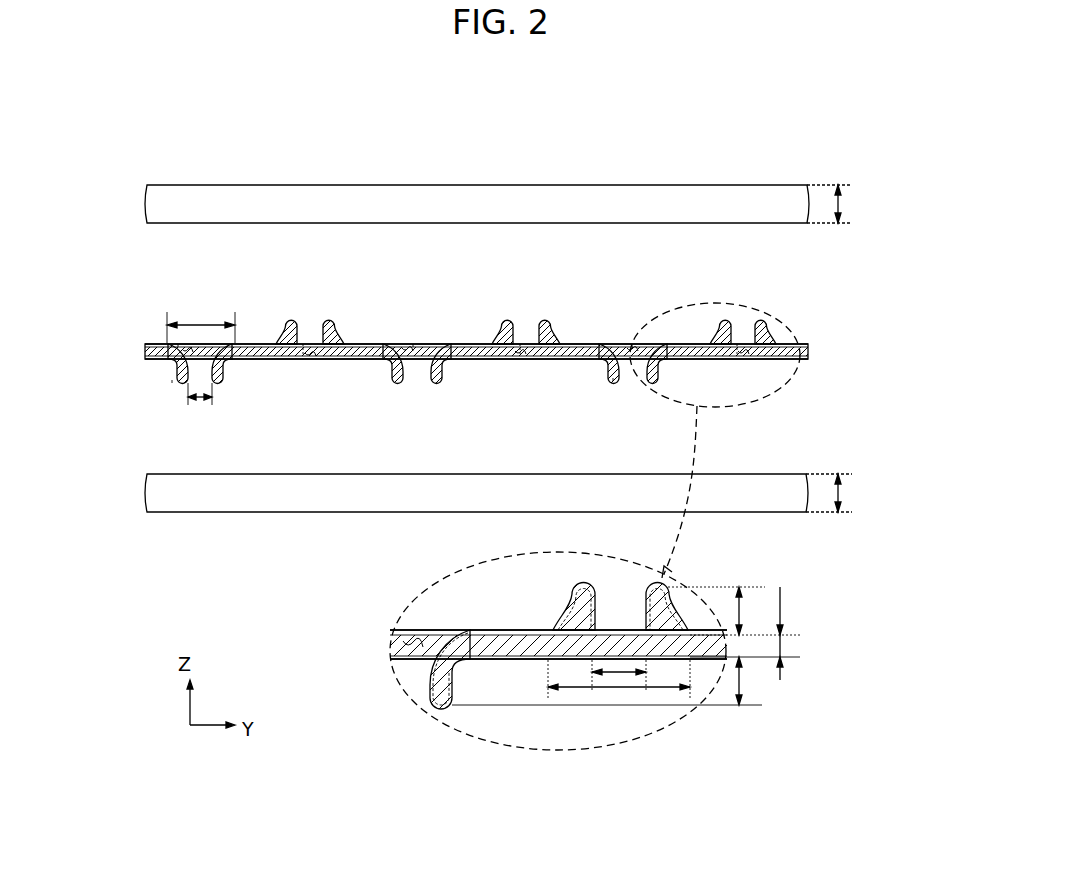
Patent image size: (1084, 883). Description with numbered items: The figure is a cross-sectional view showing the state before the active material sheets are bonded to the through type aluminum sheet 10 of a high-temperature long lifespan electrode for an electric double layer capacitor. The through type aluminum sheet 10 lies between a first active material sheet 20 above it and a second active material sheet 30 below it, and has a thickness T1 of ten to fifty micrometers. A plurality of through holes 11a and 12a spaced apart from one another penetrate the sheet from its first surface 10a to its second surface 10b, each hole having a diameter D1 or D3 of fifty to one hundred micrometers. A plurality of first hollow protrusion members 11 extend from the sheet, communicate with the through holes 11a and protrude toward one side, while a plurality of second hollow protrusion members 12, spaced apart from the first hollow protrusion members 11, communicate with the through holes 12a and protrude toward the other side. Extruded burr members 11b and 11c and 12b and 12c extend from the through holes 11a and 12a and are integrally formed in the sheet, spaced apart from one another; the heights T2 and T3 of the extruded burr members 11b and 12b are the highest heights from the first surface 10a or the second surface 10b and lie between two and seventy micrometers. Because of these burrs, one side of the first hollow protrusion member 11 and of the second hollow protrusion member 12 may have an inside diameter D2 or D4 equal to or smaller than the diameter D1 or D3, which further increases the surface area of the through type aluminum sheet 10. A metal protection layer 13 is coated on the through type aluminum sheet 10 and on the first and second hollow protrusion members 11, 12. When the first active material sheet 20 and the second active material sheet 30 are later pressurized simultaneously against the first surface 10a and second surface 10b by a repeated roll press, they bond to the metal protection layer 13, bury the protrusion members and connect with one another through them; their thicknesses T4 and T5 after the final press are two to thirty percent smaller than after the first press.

The through type aluminum sheet 10 is at (484, 361).
The first surface 10a is at (348, 349).
The second surface 10b is at (363, 367).
The first hollow protrusion member 11 is at (298, 317).
The through hole 11a is at (303, 360).
The extruded burr member 11b is at (738, 345).
The extruded burr member 11c is at (762, 350).
The second hollow protrusion member 12 is at (397, 383).
The through hole 12a is at (178, 345).
The extruded burr member 12b is at (172, 383).
The extruded burr member 12c is at (230, 367).
The metal protection layer 13 is at (258, 343).
The first active material sheet 20 is at (488, 192).
The second active material sheet 30 is at (181, 503).
The diameter D1 is at (583, 690).
The inside diameter D2 is at (622, 690).
The diameter D3 is at (201, 321).
The inside diameter D4 is at (215, 405).
The thickness T1 is at (790, 633).
The height T2 is at (734, 611).
The height T3 is at (626, 681).
The thickness T4 is at (853, 204).
The thickness T5 is at (853, 493).